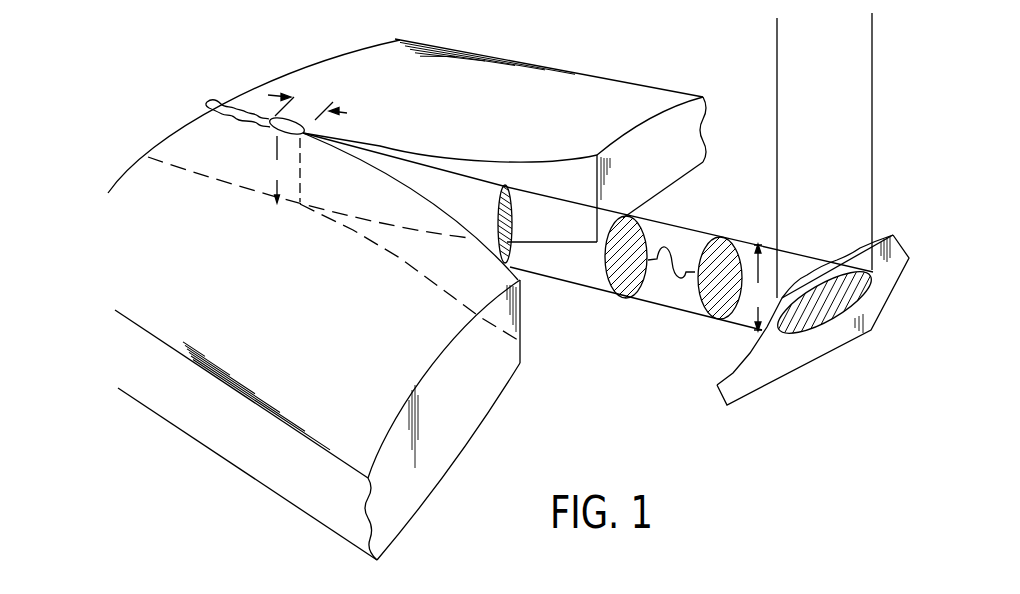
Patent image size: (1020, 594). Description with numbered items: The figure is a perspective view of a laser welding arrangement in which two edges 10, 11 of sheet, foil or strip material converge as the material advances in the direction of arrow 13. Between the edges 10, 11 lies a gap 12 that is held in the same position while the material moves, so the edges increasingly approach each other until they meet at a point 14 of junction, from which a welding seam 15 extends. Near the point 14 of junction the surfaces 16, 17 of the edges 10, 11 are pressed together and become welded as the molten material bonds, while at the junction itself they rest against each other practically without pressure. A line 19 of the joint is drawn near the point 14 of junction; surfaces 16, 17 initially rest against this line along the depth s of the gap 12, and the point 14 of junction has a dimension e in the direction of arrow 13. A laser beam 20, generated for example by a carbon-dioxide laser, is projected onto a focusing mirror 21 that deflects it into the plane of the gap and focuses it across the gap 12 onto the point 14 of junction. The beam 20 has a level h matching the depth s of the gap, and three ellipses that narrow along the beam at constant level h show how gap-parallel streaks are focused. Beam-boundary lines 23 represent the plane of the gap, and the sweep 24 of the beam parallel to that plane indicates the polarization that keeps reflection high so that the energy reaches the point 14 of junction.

The edge 10 is at (485, 284).
The edge 11 is at (580, 148).
The gap 12 is at (532, 285).
The arrow 13 is at (203, 230).
The point of junction 14 is at (295, 119).
The welding seam 15 is at (233, 103).
The surface 16 is at (522, 337).
The surface 17 is at (580, 233).
The line of the joint 19 is at (301, 162).
The laser beam 20 is at (842, 171).
The focusing mirror 21 is at (834, 341).
The beam-boundary lines 23 is at (719, 236).
The sweep parallel to the plane of the gap 24 is at (669, 290).
The dimension of the point of junction e is at (307, 107).
The depth of the gap s is at (275, 169).
The beam level h is at (756, 287).